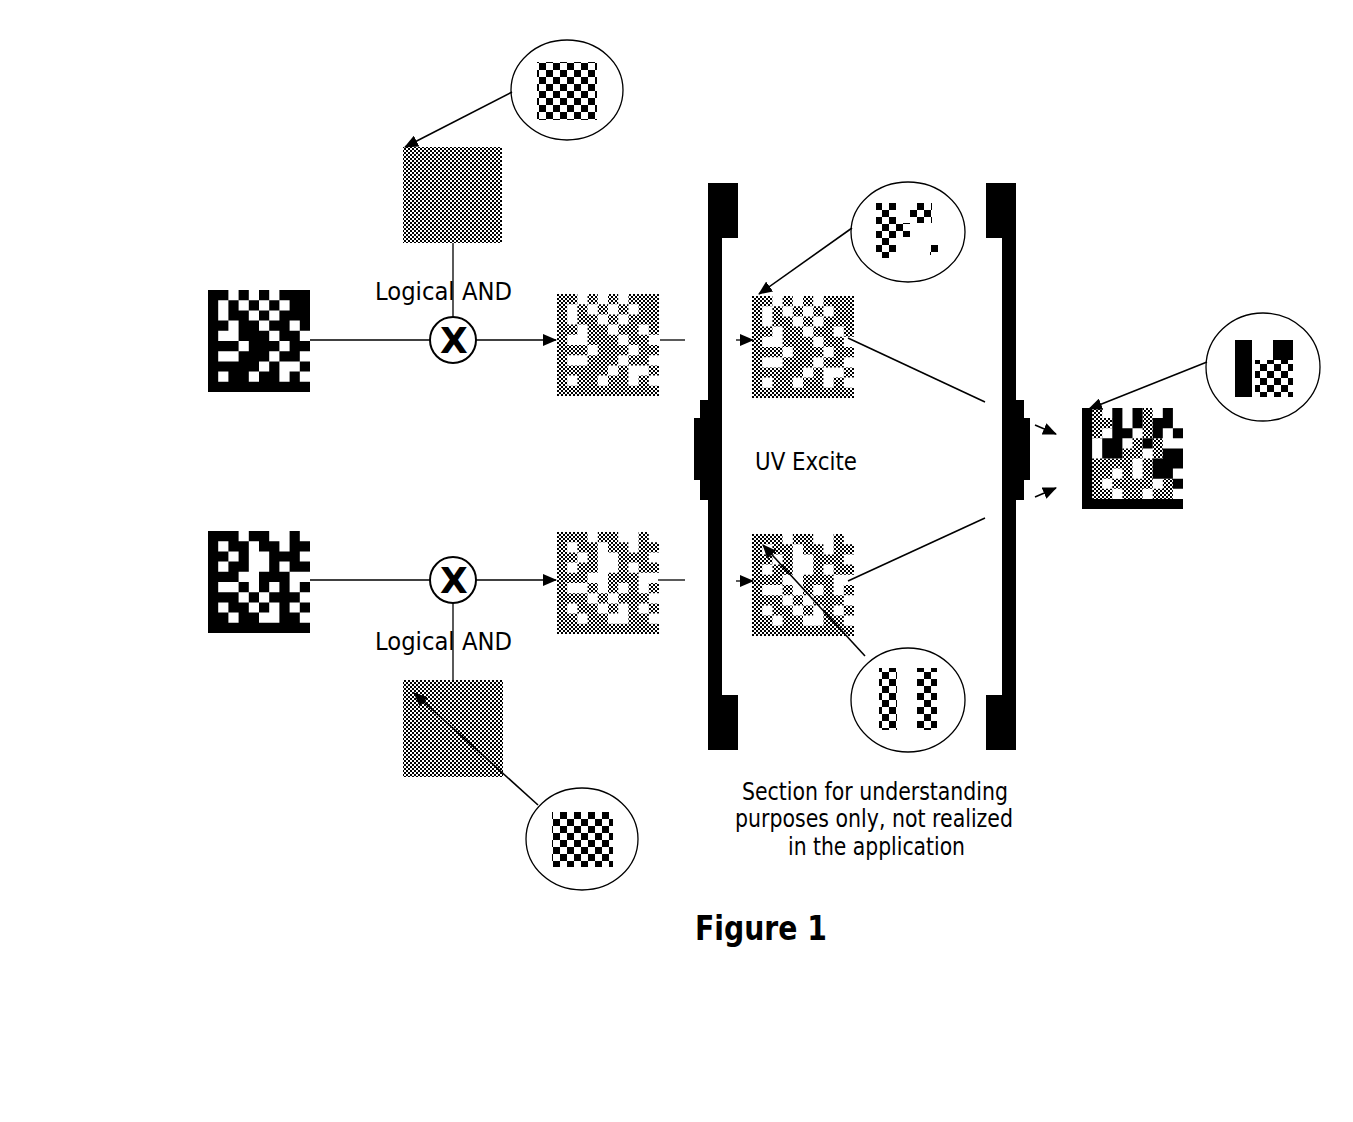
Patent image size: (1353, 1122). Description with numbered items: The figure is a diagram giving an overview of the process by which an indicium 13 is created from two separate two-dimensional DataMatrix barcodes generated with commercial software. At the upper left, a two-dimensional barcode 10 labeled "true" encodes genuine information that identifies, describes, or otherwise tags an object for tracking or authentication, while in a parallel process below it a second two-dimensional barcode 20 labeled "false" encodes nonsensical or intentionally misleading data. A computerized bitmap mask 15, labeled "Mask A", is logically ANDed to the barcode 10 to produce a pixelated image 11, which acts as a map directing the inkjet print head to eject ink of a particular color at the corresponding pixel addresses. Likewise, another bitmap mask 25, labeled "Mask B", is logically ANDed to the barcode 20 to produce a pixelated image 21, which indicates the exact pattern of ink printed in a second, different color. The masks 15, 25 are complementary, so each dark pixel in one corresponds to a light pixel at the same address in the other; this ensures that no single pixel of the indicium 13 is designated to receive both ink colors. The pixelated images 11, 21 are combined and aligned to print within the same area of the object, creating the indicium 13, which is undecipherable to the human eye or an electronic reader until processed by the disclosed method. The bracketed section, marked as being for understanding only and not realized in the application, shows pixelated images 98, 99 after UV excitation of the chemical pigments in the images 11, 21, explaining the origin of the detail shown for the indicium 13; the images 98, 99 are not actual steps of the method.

The 2-D barcode 10 is at (268, 288).
The bitmap mask 15 is at (402, 169).
The pixelated image 11 is at (650, 292).
The pixelated image 98 is at (851, 312).
The 2-D barcode 20 is at (277, 634).
The bitmap mask 25 is at (449, 779).
The pixelated image 21 is at (574, 637).
The pixelated image 99 is at (789, 637).
The indicium 13 is at (1186, 465).